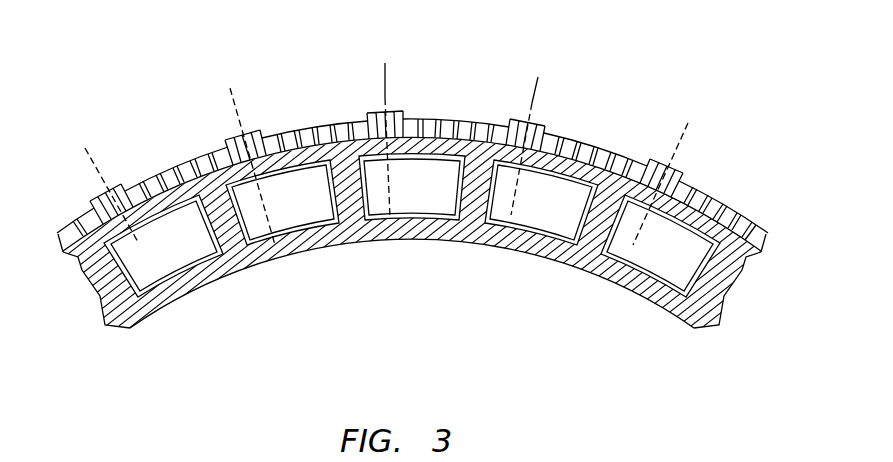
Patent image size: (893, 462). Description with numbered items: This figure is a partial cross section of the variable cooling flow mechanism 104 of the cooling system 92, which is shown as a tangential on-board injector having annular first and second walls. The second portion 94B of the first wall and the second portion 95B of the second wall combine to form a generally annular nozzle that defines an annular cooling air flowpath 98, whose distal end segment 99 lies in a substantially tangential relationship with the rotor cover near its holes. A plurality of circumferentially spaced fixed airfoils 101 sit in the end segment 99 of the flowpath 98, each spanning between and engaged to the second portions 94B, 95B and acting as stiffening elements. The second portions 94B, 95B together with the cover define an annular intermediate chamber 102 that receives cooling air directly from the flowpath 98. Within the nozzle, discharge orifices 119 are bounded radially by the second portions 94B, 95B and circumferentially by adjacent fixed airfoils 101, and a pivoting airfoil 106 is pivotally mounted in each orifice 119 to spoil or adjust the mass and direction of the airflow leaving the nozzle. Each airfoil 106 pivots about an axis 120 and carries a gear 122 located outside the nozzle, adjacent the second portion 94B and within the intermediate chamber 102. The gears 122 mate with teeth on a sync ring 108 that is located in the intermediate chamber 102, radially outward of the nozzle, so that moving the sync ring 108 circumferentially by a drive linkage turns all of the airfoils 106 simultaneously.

The cooling system 92 is at (680, 70).
The variable cooling flow mechanism 104 is at (682, 105).
The axis 120 is at (384, 78).
The sync ring 108 is at (433, 117).
The gear 122 is at (233, 137).
The intermediate chamber 102 is at (170, 142).
The second portion of the first wall 94B is at (97, 214).
The pivoting airfoil 106 is at (170, 258).
The discharge orifice 119 is at (272, 248).
The second portion of the second wall 95B is at (293, 242).
The fixed airfoil 101 is at (353, 197).
The end segment 99 is at (664, 290).
The cooling air flowpath 98 is at (130, 290).